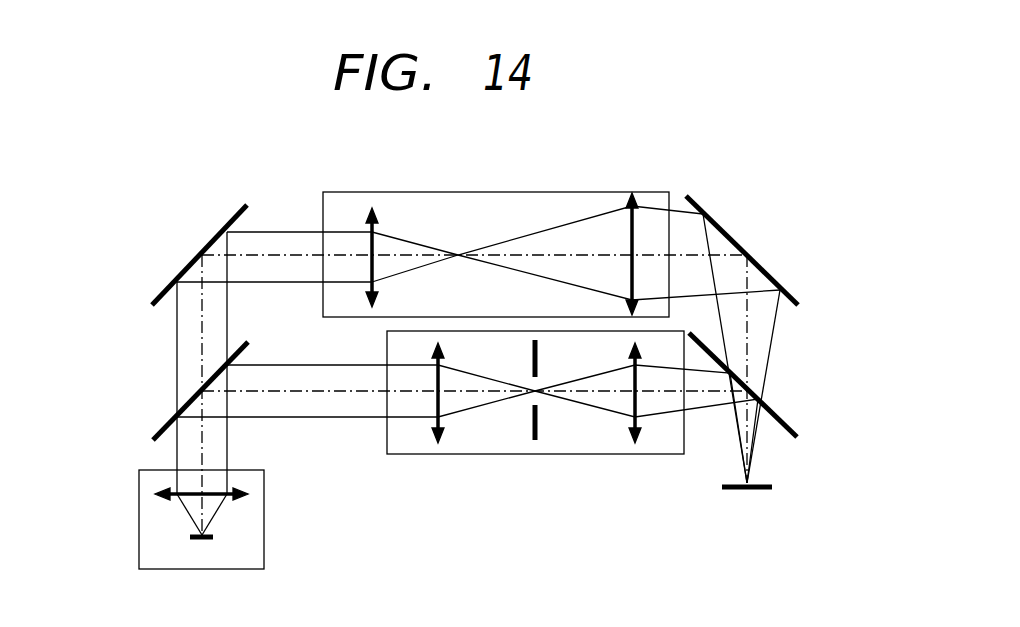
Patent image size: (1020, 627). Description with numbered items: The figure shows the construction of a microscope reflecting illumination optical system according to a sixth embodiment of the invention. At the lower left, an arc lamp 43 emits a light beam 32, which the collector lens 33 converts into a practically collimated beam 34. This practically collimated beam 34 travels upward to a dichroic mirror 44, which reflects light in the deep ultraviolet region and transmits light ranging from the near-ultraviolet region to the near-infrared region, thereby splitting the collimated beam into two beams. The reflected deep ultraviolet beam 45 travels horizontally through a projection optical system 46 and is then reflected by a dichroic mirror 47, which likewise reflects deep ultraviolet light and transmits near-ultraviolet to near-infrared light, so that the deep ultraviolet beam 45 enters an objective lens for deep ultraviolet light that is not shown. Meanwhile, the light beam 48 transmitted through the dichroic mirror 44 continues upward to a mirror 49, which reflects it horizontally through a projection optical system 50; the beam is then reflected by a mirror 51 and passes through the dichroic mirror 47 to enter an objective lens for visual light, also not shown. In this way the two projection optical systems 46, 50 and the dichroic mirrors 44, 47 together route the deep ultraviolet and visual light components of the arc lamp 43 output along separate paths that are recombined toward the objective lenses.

The mirror 49 is at (228, 218).
The projection optical system 50 is at (492, 192).
The mirror 51 is at (718, 223).
The dichroic mirror 47 is at (782, 417).
The light beam 48 is at (177, 343).
The dichroic mirror 44 is at (177, 418).
The practically collimated beam 34 is at (177, 456).
The light beam 32 is at (187, 520).
The collector lens 33 is at (248, 494).
The arc lamp 43 is at (213, 540).
The deep ultraviolet beam 45 is at (345, 422).
The projection optical system 46 is at (538, 455).